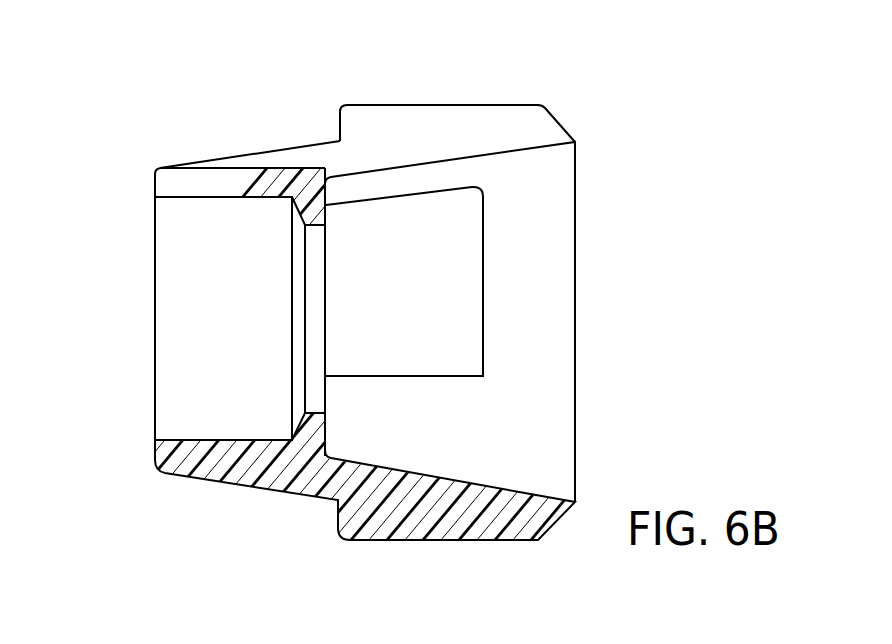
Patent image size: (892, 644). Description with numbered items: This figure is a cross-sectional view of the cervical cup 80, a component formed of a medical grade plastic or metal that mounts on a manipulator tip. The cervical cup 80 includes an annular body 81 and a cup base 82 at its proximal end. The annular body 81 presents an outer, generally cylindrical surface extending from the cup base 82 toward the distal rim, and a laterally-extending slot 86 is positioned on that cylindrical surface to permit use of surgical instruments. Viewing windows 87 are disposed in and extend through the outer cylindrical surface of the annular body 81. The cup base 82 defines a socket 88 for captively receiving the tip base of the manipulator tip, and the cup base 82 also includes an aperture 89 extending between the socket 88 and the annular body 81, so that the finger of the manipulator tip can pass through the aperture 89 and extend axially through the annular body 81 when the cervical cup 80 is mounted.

The cervical cup 80 is at (118, 225).
The annular body 81 is at (448, 493).
The cup base 82 is at (262, 490).
The laterally-extending slot 86 is at (397, 137).
The viewing windows 87 is at (363, 350).
The socket 88 is at (217, 220).
The aperture 89 is at (317, 305).